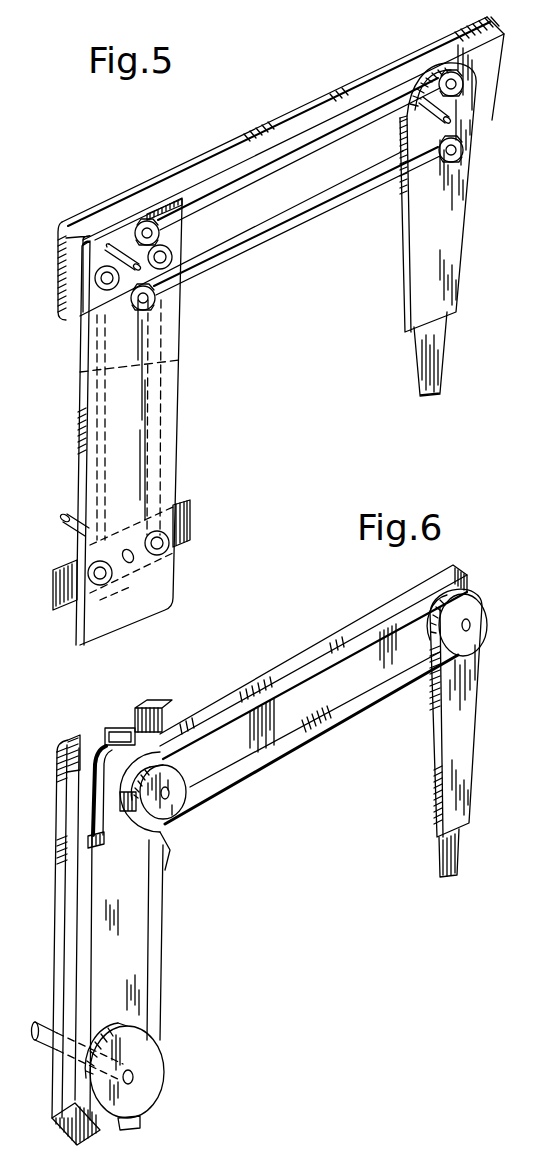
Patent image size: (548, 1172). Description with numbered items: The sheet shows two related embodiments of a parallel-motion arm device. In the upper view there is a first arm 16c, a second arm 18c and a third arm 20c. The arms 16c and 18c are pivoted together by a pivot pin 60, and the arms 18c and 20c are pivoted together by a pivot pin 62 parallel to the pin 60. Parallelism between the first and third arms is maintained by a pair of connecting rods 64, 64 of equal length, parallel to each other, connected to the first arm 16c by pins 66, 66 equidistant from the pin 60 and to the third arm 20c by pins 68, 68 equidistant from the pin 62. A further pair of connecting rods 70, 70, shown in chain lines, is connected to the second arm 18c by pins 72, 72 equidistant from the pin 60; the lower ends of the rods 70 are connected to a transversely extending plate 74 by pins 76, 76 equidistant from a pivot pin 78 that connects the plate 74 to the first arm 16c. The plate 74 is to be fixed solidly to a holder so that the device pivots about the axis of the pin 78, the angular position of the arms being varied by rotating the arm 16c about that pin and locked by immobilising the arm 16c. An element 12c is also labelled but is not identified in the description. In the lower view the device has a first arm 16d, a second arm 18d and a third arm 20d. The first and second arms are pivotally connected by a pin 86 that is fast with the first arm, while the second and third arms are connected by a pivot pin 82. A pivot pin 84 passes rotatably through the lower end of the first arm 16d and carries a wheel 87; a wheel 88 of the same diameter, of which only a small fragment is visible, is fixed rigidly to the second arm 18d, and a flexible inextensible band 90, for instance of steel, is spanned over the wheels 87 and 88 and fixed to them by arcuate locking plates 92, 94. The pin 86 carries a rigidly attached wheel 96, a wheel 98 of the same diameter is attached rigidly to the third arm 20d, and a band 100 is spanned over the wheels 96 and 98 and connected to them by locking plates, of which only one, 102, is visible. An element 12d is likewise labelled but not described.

In FIG. 5, the leg 12c is at (442, 366).
In FIG. 5, the first arm 16c is at (173, 383).
In FIG. 5, the second arm 18c is at (195, 160).
In FIG. 5, the third arm 20c is at (466, 238).
In FIG. 5, the pivot pin 60 is at (125, 253).
In FIG. 5, the pivot pin 62 is at (421, 100).
In FIG. 5, the connecting rods 64 is at (298, 222).
In FIG. 5, the pins 66 is at (157, 306).
In FIG. 5, the pins 68 is at (459, 157).
In FIG. 5, the connecting rods 70 is at (100, 372).
In FIG. 5, the pins 72 is at (92, 285).
In FIG. 5, the transversely extending plate 74 is at (187, 547).
In FIG. 5, the pins 76 is at (140, 590).
In FIG. 5, the pivot pin 78 is at (73, 518).
In FIG. 6, the leg 12d is at (441, 853).
In FIG. 6, the first arm 16d is at (60, 878).
In FIG. 6, the second arm 18d is at (215, 698).
In FIG. 6, the third arm 20d is at (437, 755).
In FIG. 6, the pivot pin 82 is at (420, 650).
In FIG. 6, the pivot pin 84 is at (38, 1026).
In FIG. 6, the pin 86 is at (168, 793).
In FIG. 6, the wheel 87 is at (155, 1063).
In FIG. 6, the wheel 88 is at (92, 792).
In FIG. 6, the flexible inextensible band 90 is at (160, 927).
In FIG. 6, the arcuate locking plate 92 is at (143, 1127).
In FIG. 6, the arcuate locking plate 94 is at (78, 758).
In FIG. 6, the wheel 96 is at (157, 820).
In FIG. 6, the wheel 98 is at (419, 613).
In FIG. 6, the band 100 is at (280, 753).
In FIG. 6, the locking plate 102 is at (168, 850).